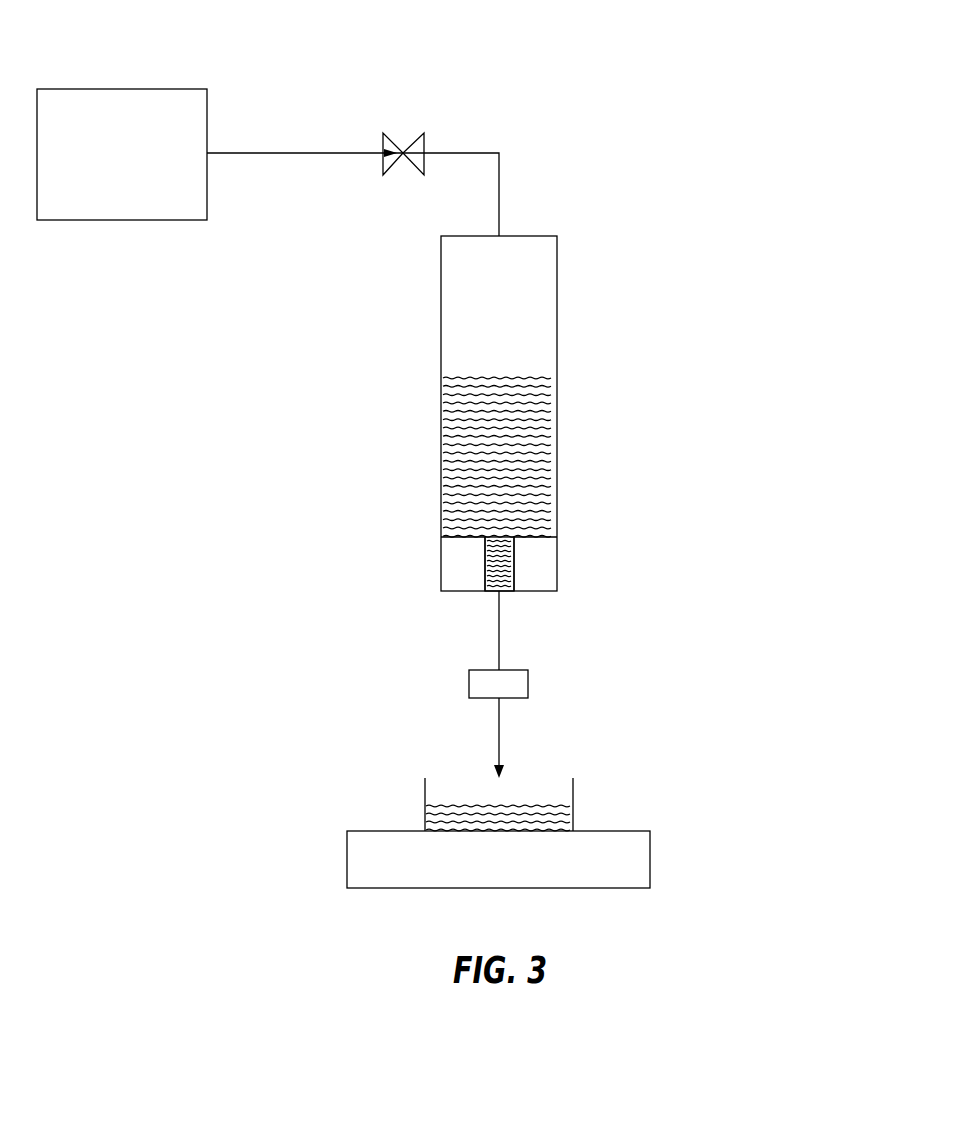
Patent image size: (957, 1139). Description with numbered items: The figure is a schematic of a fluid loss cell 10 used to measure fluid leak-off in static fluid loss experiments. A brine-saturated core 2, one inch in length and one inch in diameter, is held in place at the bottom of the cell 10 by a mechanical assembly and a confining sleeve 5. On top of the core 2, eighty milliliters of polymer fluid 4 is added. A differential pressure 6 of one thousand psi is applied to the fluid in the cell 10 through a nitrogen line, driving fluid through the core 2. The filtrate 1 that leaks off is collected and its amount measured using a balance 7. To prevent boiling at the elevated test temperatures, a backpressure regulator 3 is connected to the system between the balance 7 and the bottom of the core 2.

The fluid loss cell 10 is at (758, 50).
The differential pressure 6 is at (122, 89).
The polymer fluid 4 is at (454, 447).
The confining sleeve 5 is at (441, 565).
The core 2 is at (500, 565).
The backpressure regulator 3 is at (469, 685).
The filtrate 1 is at (425, 805).
The balance 7 is at (347, 860).